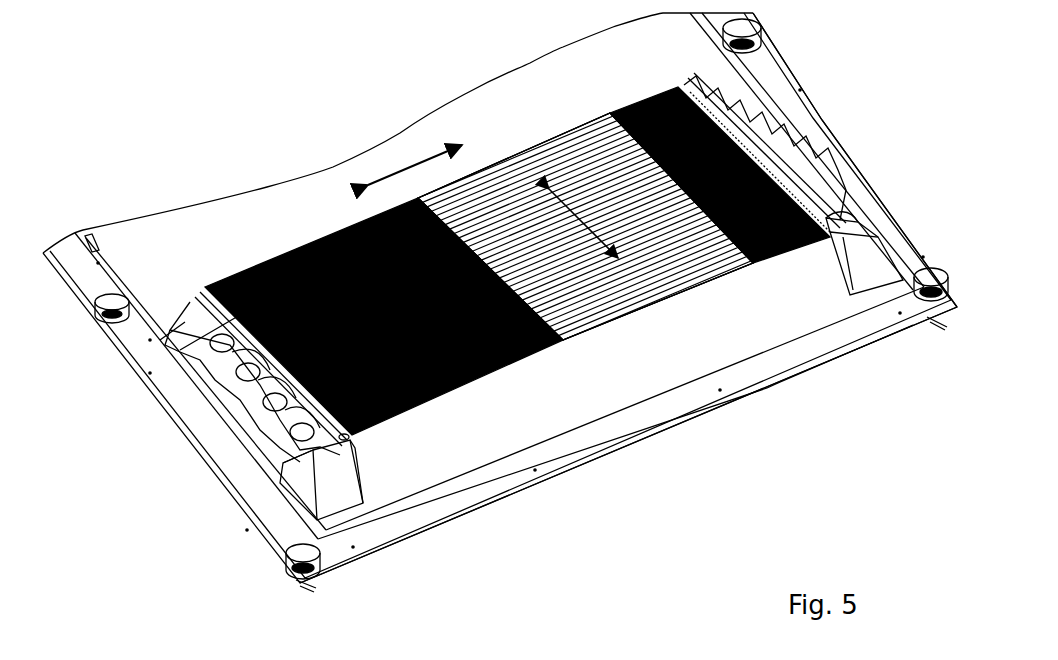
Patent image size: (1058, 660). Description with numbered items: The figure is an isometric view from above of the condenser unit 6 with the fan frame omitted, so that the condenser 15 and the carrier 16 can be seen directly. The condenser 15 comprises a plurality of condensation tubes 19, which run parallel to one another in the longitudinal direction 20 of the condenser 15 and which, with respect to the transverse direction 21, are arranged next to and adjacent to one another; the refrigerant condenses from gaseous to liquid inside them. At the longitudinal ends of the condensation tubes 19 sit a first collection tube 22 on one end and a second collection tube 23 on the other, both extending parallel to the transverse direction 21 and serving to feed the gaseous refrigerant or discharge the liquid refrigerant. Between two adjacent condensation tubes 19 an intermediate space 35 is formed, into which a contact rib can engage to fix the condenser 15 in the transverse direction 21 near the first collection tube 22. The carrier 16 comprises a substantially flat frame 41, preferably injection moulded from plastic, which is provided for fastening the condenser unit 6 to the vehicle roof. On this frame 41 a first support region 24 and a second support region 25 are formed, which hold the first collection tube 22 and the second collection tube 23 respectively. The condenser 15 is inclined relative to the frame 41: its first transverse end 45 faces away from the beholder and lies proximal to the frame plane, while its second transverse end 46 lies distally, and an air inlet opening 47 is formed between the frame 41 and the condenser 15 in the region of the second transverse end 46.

The condenser unit 6 is at (290, 110).
The condenser 15 is at (490, 380).
The carrier 16 is at (462, 525).
The condensation tubes 19 is at (534, 160).
The longitudinal direction 20 is at (413, 167).
The transverse direction 21 is at (582, 227).
The first collection tube 22 is at (783, 163).
The second collection tube 23 is at (273, 373).
The first support region 24 is at (827, 245).
The second support region 25 is at (350, 437).
The intermediate space 35 is at (587, 158).
The frame 41 is at (845, 182).
The first transverse end 45 is at (517, 150).
The second transverse end 46 is at (663, 300).
The air inlet opening 47 is at (572, 397).